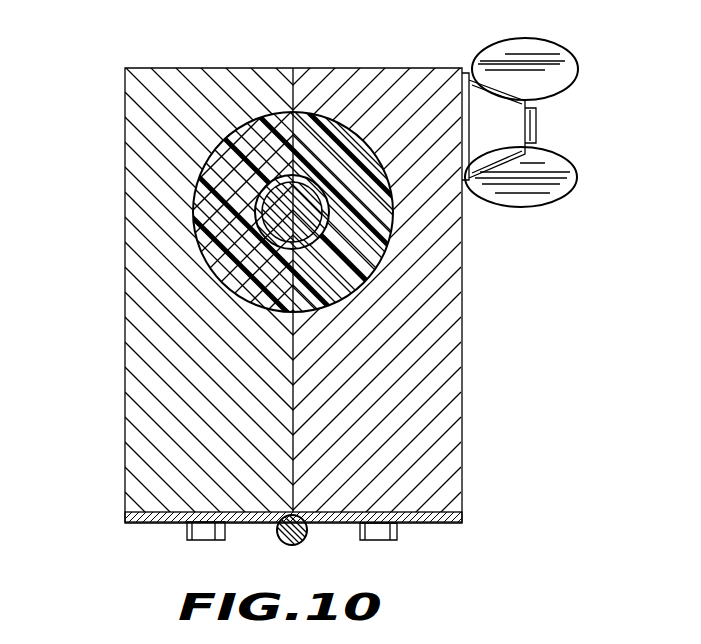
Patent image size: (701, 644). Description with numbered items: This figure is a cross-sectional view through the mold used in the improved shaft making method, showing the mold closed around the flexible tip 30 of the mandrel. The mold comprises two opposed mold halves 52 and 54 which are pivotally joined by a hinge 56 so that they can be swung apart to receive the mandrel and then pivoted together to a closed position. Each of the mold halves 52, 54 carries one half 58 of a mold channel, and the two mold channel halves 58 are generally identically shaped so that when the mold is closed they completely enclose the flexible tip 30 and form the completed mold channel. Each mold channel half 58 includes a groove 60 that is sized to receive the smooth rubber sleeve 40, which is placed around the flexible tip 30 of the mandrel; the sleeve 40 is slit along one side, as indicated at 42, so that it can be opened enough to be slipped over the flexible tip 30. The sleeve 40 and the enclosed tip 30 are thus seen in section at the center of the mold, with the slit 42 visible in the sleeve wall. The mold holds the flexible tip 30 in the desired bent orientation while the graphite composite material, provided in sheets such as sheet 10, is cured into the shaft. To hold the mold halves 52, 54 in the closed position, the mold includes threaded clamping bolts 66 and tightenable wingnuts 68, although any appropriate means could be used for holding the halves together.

The sheet of graphite composite material 10 is at (328, 247).
The flexible tip 30 is at (303, 218).
The rubber sleeve 40 is at (229, 226).
The slit 42 is at (290, 289).
The mold half 52 is at (135, 262).
The mold half 54 is at (428, 407).
The hinge 56 is at (280, 540).
The mold channel half 58 is at (240, 107).
The groove 60 is at (358, 128).
The threaded clamping bolt 66 is at (537, 120).
The wingnut 68 is at (575, 183).